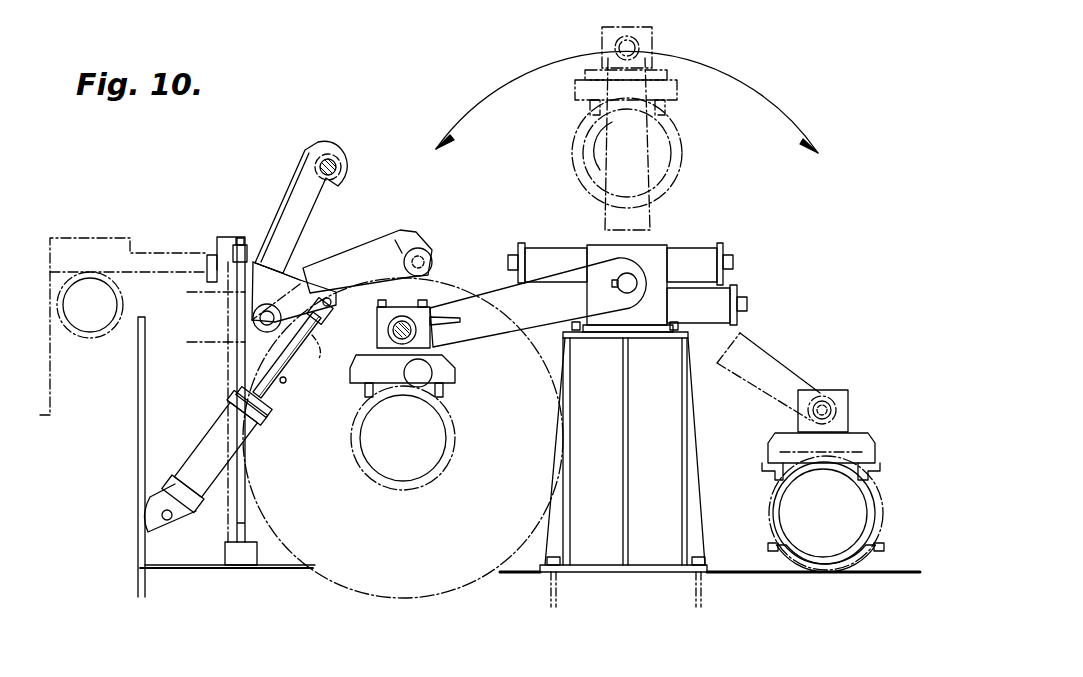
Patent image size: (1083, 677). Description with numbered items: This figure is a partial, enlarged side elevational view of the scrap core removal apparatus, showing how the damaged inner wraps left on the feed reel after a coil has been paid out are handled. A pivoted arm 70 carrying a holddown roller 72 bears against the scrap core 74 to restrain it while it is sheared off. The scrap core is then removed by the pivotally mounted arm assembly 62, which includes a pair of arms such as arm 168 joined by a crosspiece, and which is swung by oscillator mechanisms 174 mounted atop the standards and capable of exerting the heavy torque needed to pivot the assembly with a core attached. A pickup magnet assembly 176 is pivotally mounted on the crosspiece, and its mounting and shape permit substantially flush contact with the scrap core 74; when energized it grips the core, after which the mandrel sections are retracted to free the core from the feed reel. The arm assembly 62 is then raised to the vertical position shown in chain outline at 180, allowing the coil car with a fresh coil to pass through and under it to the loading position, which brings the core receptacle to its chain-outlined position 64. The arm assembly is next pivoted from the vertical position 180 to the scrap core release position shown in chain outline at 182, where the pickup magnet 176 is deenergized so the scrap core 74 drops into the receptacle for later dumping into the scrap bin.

The arm assembly 62 is at (634, 278).
The chain-outlined position of the scrap core receptacle 64 is at (882, 552).
The pivoted arm 70 is at (287, 180).
The holddown roller 72 is at (343, 160).
The scrap core 74 is at (350, 440).
The arm 168 is at (482, 302).
The oscillator mechanism 174 is at (590, 243).
The pickup magnet assembly 176 is at (358, 367).
The vertical position of the arm assembly 180 is at (677, 89).
The scrap core release position of the arm assembly 182 is at (850, 398).